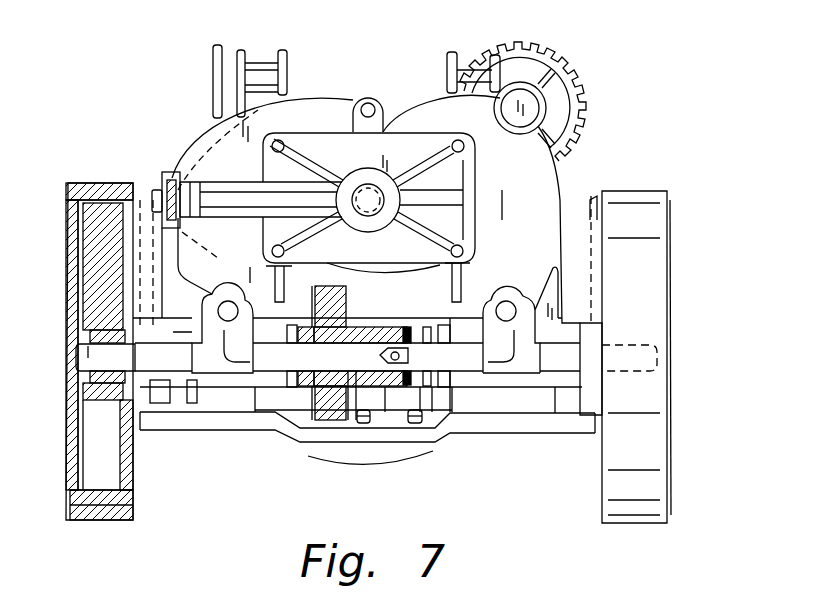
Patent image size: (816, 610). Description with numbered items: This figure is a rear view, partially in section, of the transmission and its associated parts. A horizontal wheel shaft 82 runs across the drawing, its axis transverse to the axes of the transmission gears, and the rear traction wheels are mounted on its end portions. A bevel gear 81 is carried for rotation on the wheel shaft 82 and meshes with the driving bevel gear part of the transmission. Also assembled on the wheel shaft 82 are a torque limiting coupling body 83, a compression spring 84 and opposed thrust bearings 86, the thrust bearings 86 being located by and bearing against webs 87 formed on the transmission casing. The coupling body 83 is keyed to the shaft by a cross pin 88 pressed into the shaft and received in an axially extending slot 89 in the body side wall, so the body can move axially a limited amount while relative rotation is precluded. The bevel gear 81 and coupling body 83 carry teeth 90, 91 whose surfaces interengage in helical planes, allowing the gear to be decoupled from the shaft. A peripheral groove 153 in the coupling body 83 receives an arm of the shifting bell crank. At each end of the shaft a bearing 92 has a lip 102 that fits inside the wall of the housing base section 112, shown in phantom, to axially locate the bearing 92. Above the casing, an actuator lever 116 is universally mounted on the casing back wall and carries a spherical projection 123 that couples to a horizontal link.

The bevel gear 81 is at (332, 395).
The wheel shaft 82 is at (466, 373).
The torque limiting coupling body 83 is at (355, 395).
The compression spring 84 is at (433, 388).
The thrust bearings 86 is at (288, 372).
The webs 87 is at (255, 300).
The cross pin 88 is at (397, 365).
The axially extending slot 89 is at (407, 330).
The teeth 90 is at (337, 328).
The teeth 91 is at (352, 333).
The bearing 92 is at (140, 393).
The lip 102 is at (585, 322).
The base section 112 is at (146, 197).
The actuator lever 116 is at (365, 152).
The spherical projection 123 is at (163, 178).
The peripheral groove 153 is at (352, 388).